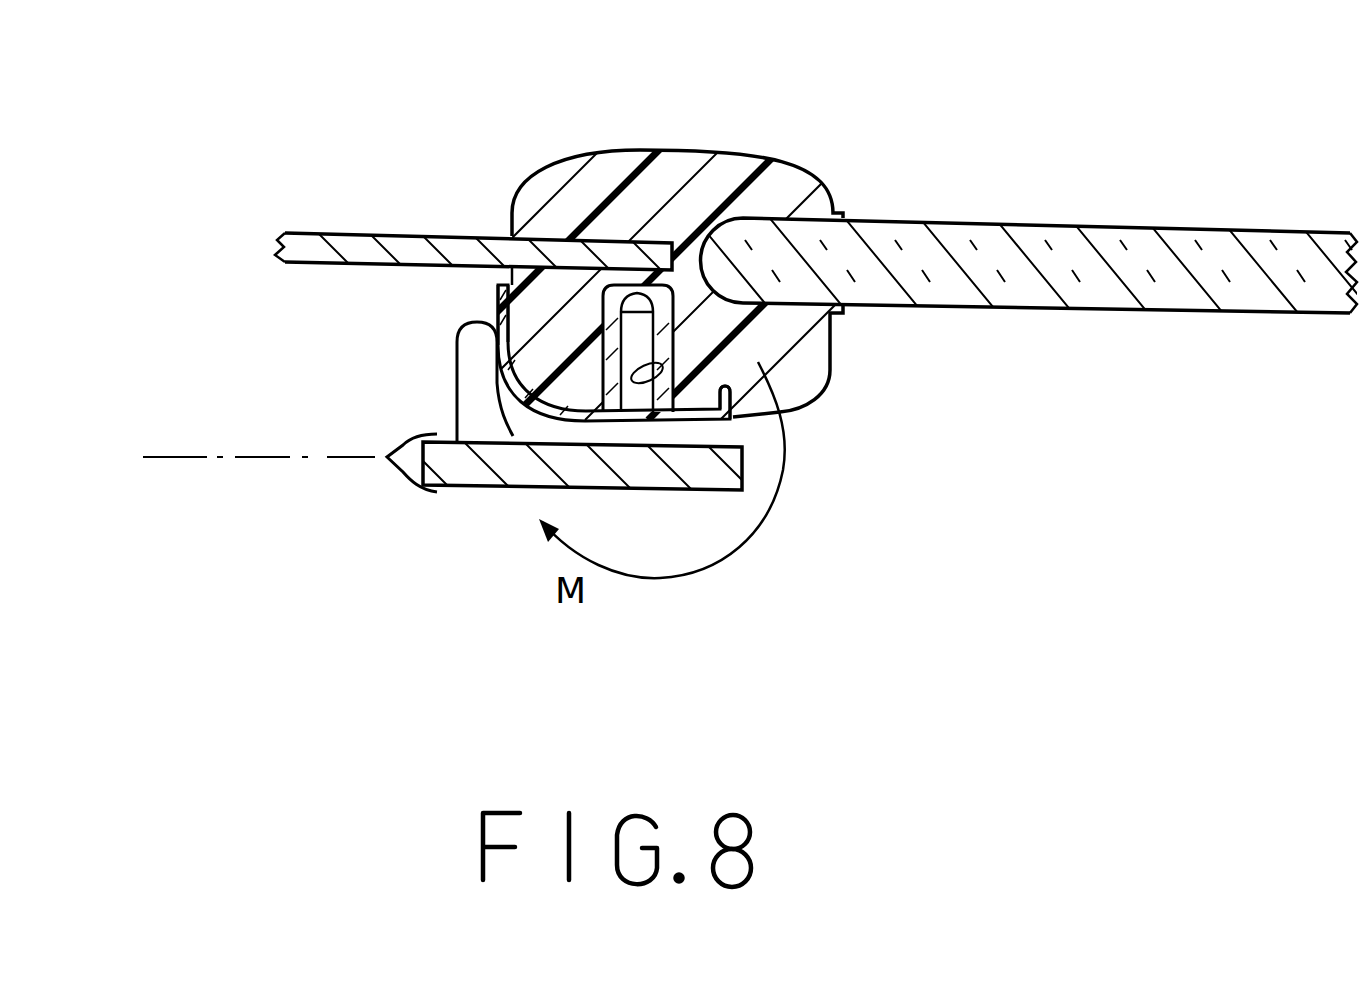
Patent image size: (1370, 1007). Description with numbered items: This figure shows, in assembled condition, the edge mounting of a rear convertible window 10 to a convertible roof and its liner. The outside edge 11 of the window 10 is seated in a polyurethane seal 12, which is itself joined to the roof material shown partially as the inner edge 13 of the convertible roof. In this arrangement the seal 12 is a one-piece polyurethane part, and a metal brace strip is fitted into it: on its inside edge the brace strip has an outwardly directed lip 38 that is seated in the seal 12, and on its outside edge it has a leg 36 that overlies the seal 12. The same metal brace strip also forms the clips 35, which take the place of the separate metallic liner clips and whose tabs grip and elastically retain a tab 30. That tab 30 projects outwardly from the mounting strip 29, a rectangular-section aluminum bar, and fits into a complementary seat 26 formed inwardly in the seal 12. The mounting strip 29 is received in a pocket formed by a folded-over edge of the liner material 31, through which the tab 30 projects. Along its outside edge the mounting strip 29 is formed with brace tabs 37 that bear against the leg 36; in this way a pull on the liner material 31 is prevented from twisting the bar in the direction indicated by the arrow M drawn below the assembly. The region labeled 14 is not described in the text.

The rear convertible window 10 is at (1045, 252).
The outside edge 11 is at (762, 247).
The polyurethane seal 12 is at (668, 145).
The inner edge of the convertible roof 13 is at (323, 243).
The flange 14 is at (575, 265).
The seat 26 is at (665, 365).
The mounting strip 29 is at (477, 465).
The tab 30 is at (635, 345).
The liner material 31 is at (272, 458).
The liner clip 35 is at (497, 406).
The leg 36 is at (497, 305).
The brace tab 37 is at (472, 365).
The lip 38 is at (740, 402).